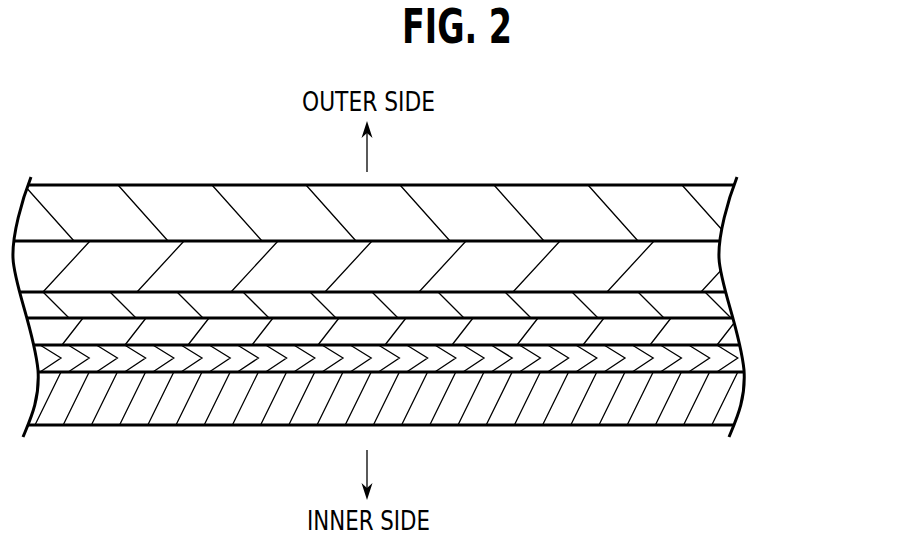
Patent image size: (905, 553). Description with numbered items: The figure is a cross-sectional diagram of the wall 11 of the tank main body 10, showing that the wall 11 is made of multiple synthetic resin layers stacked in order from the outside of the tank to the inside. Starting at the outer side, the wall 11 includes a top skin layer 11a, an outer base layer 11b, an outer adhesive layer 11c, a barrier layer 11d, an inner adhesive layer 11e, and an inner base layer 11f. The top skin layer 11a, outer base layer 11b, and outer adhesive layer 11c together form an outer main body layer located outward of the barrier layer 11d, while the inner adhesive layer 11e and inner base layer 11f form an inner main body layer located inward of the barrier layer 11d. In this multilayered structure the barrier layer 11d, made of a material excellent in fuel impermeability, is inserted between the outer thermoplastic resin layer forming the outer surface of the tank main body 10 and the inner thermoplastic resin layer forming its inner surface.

The tank main body 10 is at (752, 162).
The wall 11 is at (823, 178).
The top skin layer 11a is at (700, 215).
The outer base layer 11b is at (702, 263).
The outer adhesive layer 11c is at (697, 307).
The barrier layer 11d is at (703, 333).
The inner adhesive layer 11e is at (713, 357).
The inner base layer 11f is at (702, 397).